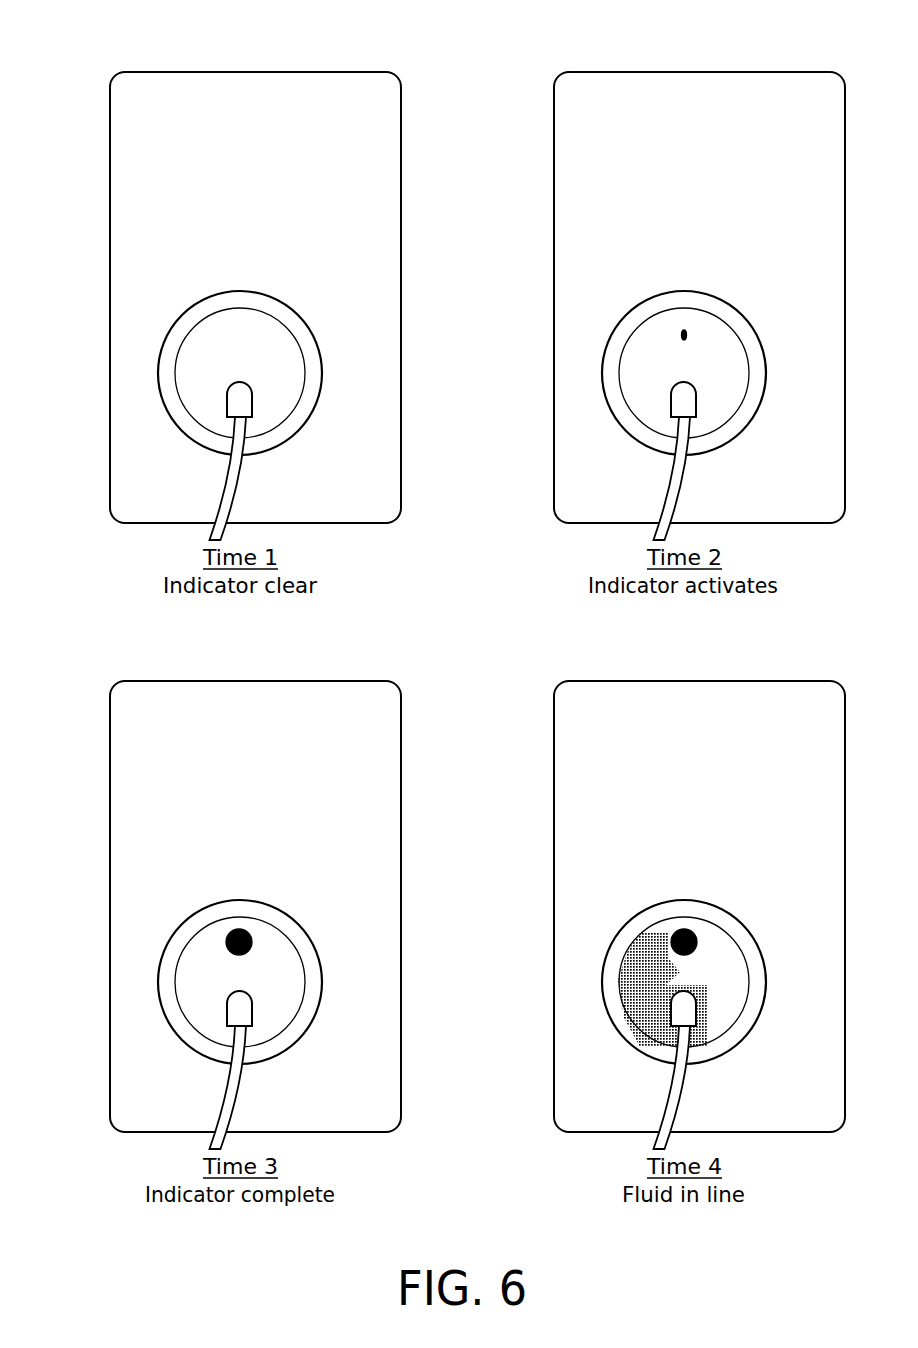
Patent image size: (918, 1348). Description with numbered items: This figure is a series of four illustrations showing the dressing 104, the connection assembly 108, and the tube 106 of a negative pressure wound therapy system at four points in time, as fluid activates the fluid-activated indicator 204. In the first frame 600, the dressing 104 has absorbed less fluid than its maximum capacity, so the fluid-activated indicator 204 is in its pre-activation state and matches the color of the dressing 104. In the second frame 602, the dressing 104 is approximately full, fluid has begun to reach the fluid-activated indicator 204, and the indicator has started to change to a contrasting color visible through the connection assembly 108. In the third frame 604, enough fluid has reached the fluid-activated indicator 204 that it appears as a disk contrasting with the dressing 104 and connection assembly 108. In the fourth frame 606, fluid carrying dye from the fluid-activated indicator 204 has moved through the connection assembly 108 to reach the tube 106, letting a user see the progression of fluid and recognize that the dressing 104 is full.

The first frame 600 is at (235, 263).
The second frame 602 is at (680, 263).
The third frame 604 is at (235, 872).
The fourth frame 606 is at (680, 872).
The dressing 104 is at (140, 163).
The connection assembly 108 is at (192, 363).
The tube 106 is at (222, 492).
The fluid-activated indicator 204 is at (684, 330).